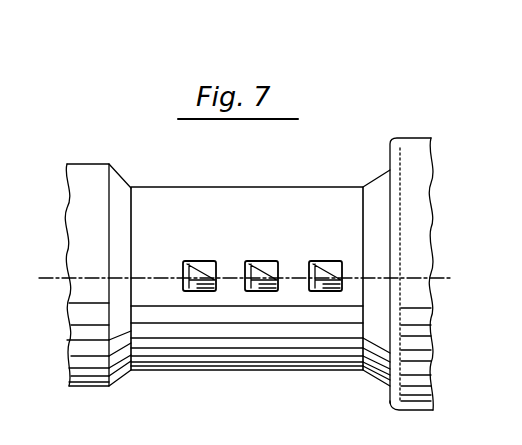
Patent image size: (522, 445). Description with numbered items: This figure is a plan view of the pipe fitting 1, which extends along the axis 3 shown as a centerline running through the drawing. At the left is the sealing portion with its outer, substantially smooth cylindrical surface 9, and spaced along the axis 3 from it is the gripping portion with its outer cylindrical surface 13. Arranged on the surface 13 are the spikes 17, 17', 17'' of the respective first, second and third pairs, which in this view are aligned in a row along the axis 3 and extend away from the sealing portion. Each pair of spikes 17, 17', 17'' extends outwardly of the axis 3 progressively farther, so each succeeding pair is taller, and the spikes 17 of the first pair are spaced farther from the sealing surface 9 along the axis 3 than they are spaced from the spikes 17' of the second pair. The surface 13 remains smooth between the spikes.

The pipe fitting 1 is at (341, 127).
The axis 3 is at (48, 280).
The outer cylindrical surface 9 is at (80, 166).
The outer cylindrical surface 13 is at (219, 189).
The spikes 17 is at (189, 249).
The spikes 17' is at (255, 249).
The spikes 17'' is at (319, 249).